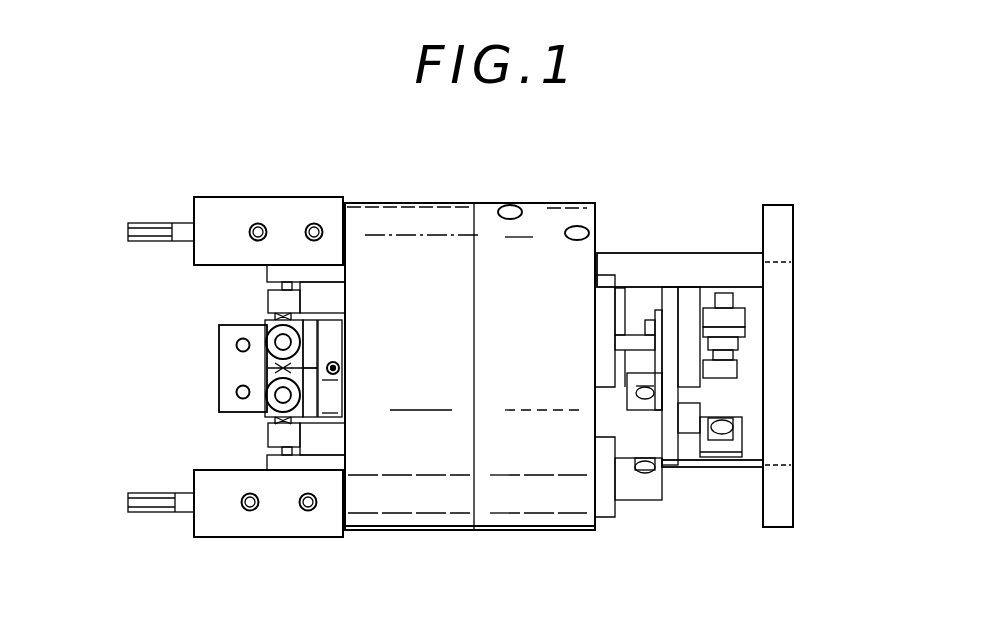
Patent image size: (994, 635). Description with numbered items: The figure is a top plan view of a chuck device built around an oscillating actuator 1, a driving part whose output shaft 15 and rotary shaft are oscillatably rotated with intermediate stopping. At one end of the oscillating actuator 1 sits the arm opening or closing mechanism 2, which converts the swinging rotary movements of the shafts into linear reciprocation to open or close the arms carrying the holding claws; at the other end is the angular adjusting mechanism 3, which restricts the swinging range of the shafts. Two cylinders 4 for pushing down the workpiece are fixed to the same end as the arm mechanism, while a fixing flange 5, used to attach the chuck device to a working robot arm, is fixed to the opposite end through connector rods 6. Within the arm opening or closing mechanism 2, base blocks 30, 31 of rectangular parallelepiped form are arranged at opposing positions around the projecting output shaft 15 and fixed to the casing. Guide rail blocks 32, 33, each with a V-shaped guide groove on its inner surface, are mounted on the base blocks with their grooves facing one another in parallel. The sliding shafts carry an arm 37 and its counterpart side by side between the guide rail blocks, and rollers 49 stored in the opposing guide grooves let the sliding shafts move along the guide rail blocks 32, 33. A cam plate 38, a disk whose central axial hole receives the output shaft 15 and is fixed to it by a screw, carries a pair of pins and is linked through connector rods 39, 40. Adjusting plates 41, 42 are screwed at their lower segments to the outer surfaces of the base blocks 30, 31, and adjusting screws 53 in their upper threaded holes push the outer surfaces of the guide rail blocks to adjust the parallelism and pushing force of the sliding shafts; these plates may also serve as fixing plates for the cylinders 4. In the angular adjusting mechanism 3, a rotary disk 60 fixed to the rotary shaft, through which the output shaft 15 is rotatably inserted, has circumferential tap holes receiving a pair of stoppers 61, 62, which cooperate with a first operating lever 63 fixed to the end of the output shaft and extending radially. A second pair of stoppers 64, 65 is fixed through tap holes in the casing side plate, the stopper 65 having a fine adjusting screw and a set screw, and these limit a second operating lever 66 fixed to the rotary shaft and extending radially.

The oscillating actuator 1 is at (469, 200).
The arm opening or closing mechanism 2 is at (213, 365).
The angular adjusting mechanism 3 is at (707, 467).
The cylinder 4 is at (230, 207).
The fixing flange 5 is at (795, 240).
The connector rod 6 is at (637, 263).
The output shaft 15 is at (340, 370).
The base block 30 is at (308, 448).
The base block 31 is at (324, 300).
The guide rail block 32 is at (278, 438).
The guide rail block 33 is at (277, 297).
The arm 37 is at (233, 347).
The cam plate 38 is at (333, 390).
The connector rod 39 is at (312, 392).
The connector rod 40 is at (312, 348).
The adjusting plate 41 is at (327, 463).
The adjusting plate 42 is at (285, 282).
The roller 49 is at (275, 317).
The adjusting screw 53 is at (283, 452).
The rotary disk 60 is at (673, 462).
The stopper 61 is at (742, 336).
The stopper 62 is at (741, 453).
The first operating lever 63 is at (740, 382).
The stopper 64 is at (648, 342).
The stopper 65 is at (630, 503).
The second operating lever 66 is at (633, 403).